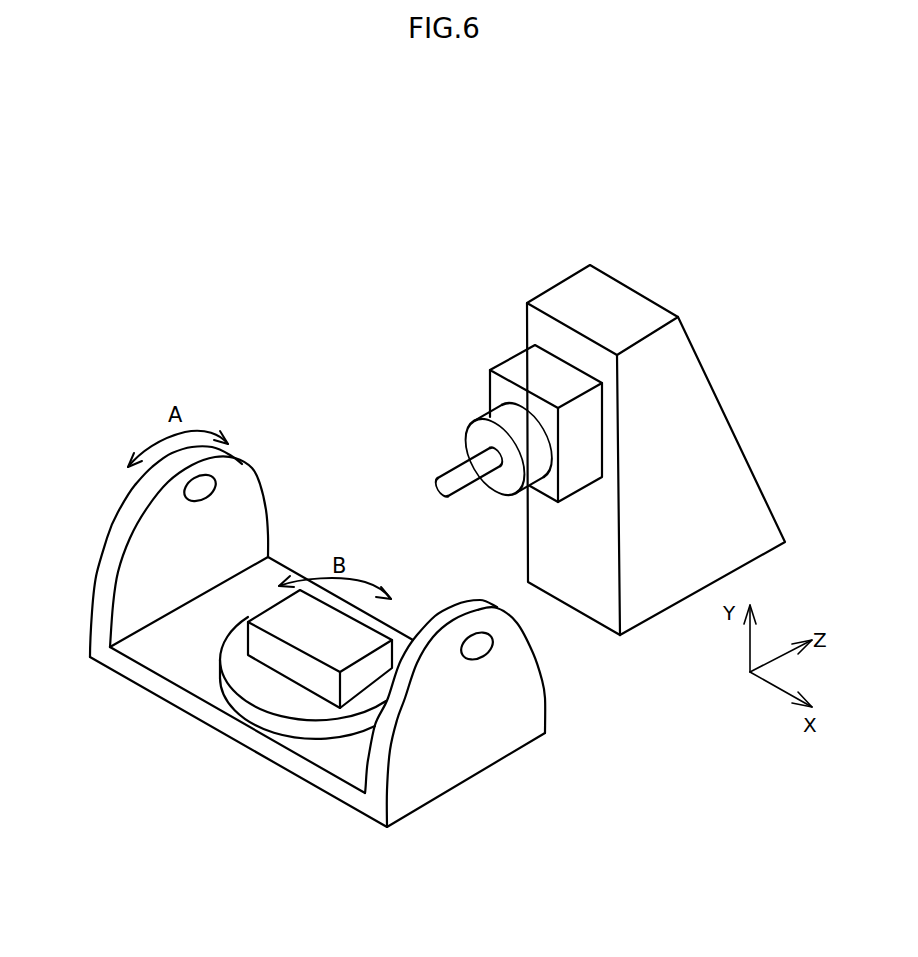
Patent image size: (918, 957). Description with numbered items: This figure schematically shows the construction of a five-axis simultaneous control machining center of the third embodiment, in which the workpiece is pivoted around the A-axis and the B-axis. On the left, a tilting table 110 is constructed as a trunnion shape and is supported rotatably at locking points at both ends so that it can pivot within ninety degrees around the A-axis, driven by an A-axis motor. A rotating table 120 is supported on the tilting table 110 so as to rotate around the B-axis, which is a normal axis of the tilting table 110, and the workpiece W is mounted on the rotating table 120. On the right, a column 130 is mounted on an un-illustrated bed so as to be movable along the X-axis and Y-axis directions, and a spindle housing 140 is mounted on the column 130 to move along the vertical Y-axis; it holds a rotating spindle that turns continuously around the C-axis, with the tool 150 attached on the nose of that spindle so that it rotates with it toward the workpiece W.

The tilting table 110 is at (124, 512).
The rotating table 120 is at (242, 706).
The workpiece W is at (307, 697).
The column 130 is at (550, 288).
The spindle housing 140 is at (507, 360).
The tool 150 is at (460, 463).